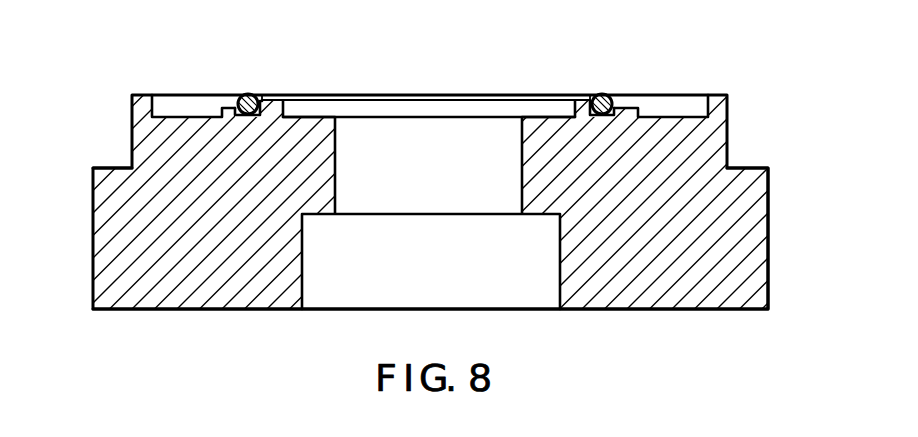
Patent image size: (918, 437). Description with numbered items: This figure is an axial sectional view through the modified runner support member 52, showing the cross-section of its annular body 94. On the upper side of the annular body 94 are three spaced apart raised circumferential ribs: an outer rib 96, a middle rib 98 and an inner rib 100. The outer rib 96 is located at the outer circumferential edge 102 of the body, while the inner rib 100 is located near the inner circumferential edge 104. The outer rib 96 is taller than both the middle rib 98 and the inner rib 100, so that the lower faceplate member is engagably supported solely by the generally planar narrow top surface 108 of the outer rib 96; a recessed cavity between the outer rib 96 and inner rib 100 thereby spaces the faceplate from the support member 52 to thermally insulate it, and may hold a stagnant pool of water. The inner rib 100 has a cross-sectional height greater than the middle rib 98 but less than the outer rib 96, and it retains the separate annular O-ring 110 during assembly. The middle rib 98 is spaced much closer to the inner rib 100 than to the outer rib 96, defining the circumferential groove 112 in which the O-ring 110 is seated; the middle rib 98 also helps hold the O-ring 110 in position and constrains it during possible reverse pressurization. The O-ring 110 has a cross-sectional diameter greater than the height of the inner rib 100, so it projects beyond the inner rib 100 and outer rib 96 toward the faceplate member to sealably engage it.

The runner support member 52 is at (459, 183).
The annular body 94 is at (768, 173).
The outer rib 96 is at (730, 103).
The middle rib 98 is at (622, 98).
The inner rib 100 is at (589, 96).
The outer circumferential edge 102 is at (130, 97).
The inner circumferential edge 104 is at (338, 125).
The top surface 108 is at (715, 95).
The O-ring 110 is at (248, 93).
The circumferential groove 112 is at (256, 112).